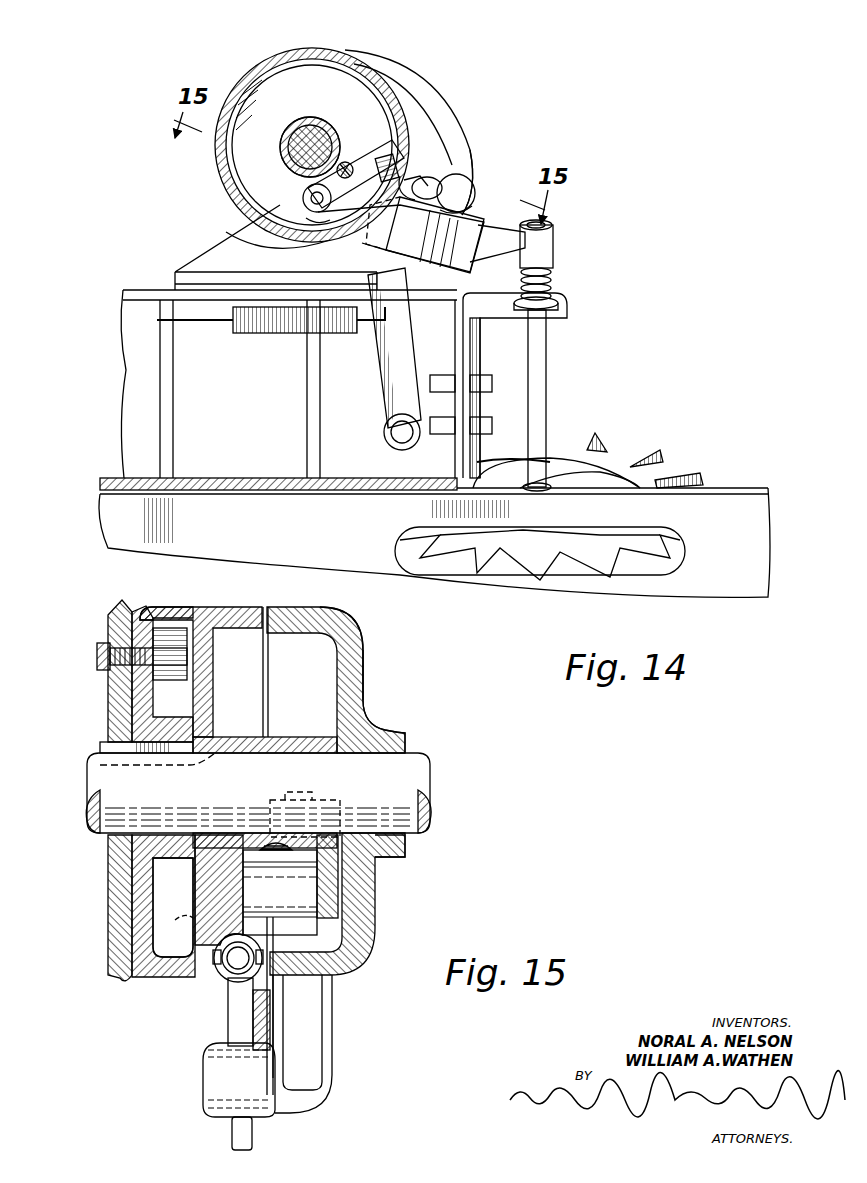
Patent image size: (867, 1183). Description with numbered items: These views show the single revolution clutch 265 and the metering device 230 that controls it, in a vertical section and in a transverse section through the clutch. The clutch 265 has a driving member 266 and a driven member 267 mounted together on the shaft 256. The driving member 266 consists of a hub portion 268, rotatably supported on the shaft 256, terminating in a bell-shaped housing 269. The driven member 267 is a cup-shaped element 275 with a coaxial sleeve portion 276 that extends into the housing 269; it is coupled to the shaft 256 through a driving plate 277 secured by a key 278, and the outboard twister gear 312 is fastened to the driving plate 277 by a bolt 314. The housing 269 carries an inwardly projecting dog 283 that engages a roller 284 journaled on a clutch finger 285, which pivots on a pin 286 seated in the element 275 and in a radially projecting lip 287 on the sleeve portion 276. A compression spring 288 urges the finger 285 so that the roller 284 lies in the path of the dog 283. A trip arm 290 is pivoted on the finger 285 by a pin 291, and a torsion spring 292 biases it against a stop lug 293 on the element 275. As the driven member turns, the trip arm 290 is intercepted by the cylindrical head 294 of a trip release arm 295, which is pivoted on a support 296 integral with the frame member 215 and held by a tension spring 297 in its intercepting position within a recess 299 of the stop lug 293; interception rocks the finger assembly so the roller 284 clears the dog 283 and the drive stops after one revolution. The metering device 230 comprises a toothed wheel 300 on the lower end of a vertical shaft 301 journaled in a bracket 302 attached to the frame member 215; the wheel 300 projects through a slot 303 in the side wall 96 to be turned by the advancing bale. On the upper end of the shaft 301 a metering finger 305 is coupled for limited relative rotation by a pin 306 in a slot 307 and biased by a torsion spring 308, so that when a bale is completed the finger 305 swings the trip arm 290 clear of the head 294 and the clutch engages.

In FIG. 14, the side wall 96 is at (750, 530).
In FIG. 14, the frame member 215 is at (335, 491).
In FIG. 14, the metering device 230 is at (607, 432).
In FIG. 14, the shaft 256 is at (309, 134).
In FIG. 15, the shaft 256 is at (408, 782).
In FIG. 14, the single revolution clutch 265 is at (291, 57).
In FIG. 15, the single revolution clutch 265 is at (366, 690).
In FIG. 15, the driving member 266 is at (376, 928).
In FIG. 14, the driven member 267 is at (218, 181).
In FIG. 15, the driven member 267 is at (224, 605).
In FIG. 15, the hub portion 268 is at (400, 740).
In FIG. 15, the bell-shaped housing 269 is at (357, 655).
In FIG. 14, the cup-shaped element 275 is at (262, 228).
In FIG. 15, the cup-shaped element 275 is at (258, 608).
In FIG. 14, the sleeve portion 276 is at (290, 152).
In FIG. 15, the sleeve portion 276 is at (290, 750).
In FIG. 15, the driving plate 277 is at (152, 607).
In FIG. 15, the key 278 is at (120, 748).
In FIG. 14, the dog 283 is at (312, 235).
In FIG. 14, the roller 284 is at (303, 196).
In FIG. 15, the roller 284 is at (295, 798).
In FIG. 14, the clutch finger 285 is at (416, 181).
In FIG. 15, the clutch finger 285 is at (278, 900).
In FIG. 14, the pin 286 is at (395, 152).
In FIG. 15, the pin 286 is at (173, 907).
In FIG. 14, the lip 287 is at (374, 150).
In FIG. 15, the lip 287 is at (330, 892).
In FIG. 14, the compression spring 288 is at (345, 161).
In FIG. 15, the compression spring 288 is at (274, 848).
In FIG. 14, the trip arm 290 is at (436, 264).
In FIG. 15, the trip arm 290 is at (235, 1131).
In FIG. 14, the pin 291 is at (452, 106).
In FIG. 15, the pin 291 is at (232, 968).
In FIG. 14, the torsion spring 292 is at (409, 166).
In FIG. 15, the torsion spring 292 is at (233, 990).
In FIG. 14, the stop lug 293 is at (468, 204).
In FIG. 15, the stop lug 293 is at (274, 1030).
In FIG. 14, the cylindrical head 294 is at (474, 190).
In FIG. 15, the cylindrical head 294 is at (218, 1077).
In FIG. 14, the trip release arm 295 is at (390, 402).
In FIG. 15, the trip release arm 295 is at (300, 1072).
In FIG. 14, the support 296 is at (388, 454).
In FIG. 14, the tension spring 297 is at (287, 326).
In FIG. 14, the recess 299 is at (466, 184).
In FIG. 14, the toothed wheel 300 is at (645, 460).
In FIG. 14, the shaft 301 is at (548, 395).
In FIG. 14, the bracket 302 is at (467, 358).
In FIG. 14, the slot 303 is at (686, 553).
In FIG. 14, the metering finger 305 is at (546, 243).
In FIG. 14, the pin 306 is at (530, 266).
In FIG. 14, the slot 307 is at (553, 262).
In FIG. 14, the torsion spring 308 is at (556, 286).
In FIG. 15, the outboard twister gear 312 is at (122, 700).
In FIG. 15, the bolt 314 is at (105, 650).